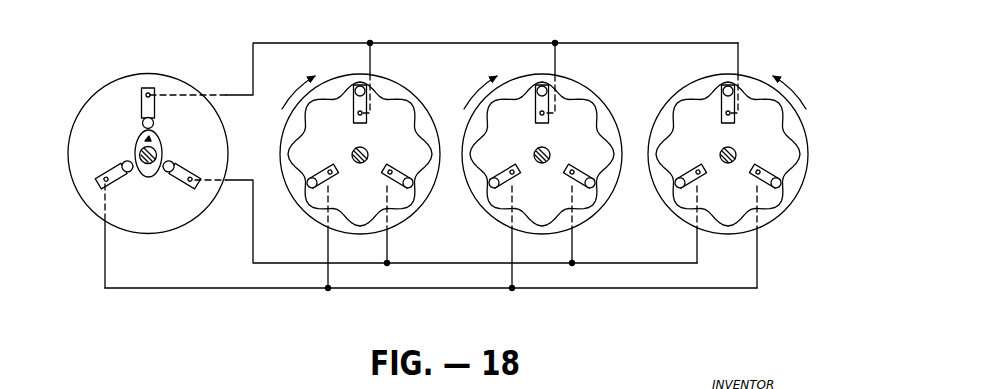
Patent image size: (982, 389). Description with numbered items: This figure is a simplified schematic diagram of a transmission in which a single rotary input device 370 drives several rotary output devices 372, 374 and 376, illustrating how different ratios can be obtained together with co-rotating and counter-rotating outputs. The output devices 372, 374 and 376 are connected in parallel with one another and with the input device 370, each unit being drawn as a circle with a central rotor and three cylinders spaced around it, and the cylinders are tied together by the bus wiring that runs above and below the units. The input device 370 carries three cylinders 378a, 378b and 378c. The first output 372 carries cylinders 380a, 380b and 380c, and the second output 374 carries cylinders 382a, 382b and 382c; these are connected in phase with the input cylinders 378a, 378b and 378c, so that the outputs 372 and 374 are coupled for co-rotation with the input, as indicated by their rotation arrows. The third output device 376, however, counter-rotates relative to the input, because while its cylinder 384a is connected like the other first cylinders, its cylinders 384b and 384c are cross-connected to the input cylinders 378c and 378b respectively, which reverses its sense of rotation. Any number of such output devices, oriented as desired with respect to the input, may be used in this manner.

The input device 370 is at (151, 158).
The output device 372 is at (366, 165).
The output device 374 is at (552, 165).
The output device 376 is at (733, 164).
The cylinder of the input 378a is at (141, 119).
The cylinder of the input 378b is at (172, 163).
The cylinder of the input 378c is at (125, 162).
The cylinder of the output 380a is at (362, 128).
The cylinder of the output 380b is at (380, 146).
The cylinder of the output 380c is at (340, 160).
The cylinder of the output 382a is at (548, 134).
The cylinder of the output 382b is at (562, 147).
The cylinder of the output 382c is at (520, 146).
The cylinder of the output 384a is at (733, 135).
The cylinder of the output 384b is at (745, 147).
The cylinder of the output 384c is at (706, 146).